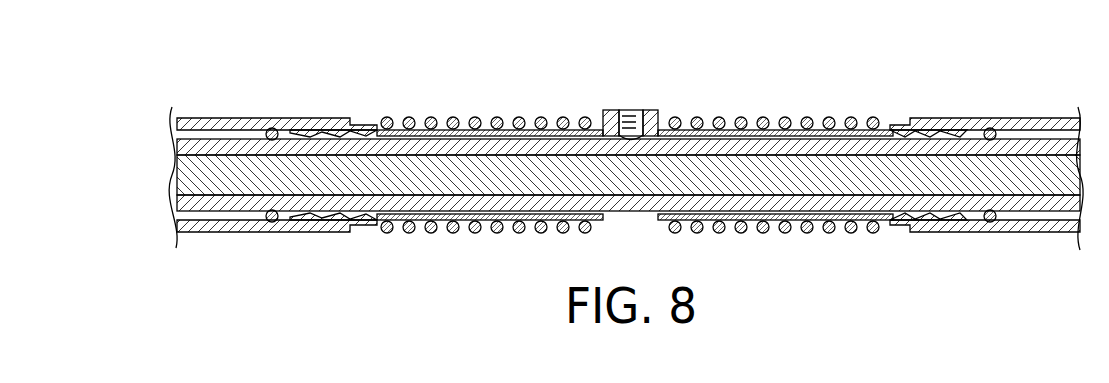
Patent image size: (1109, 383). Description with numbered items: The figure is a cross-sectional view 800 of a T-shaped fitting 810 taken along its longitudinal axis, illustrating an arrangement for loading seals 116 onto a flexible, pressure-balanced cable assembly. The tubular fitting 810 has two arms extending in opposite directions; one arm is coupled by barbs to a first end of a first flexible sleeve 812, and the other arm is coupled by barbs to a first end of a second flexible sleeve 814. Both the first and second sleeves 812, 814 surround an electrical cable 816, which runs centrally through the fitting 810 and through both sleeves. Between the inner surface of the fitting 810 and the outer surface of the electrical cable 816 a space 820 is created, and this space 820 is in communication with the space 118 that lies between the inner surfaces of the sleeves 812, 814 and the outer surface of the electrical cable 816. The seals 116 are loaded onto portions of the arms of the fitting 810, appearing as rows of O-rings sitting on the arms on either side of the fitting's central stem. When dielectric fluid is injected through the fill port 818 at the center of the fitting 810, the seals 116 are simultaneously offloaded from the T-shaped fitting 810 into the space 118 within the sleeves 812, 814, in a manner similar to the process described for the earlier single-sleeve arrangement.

The cross-sectional view 800 is at (121, 113).
The T-shaped fitting 810 is at (652, 110).
The first flexible sleeve 812 is at (1026, 118).
The second flexible sleeve 814 is at (232, 118).
The electrical cable 816 is at (1030, 211).
The fill port 818 is at (628, 110).
The space 820 is at (902, 137).
The seals 116 is at (380, 108).
The space 118 is at (291, 128).